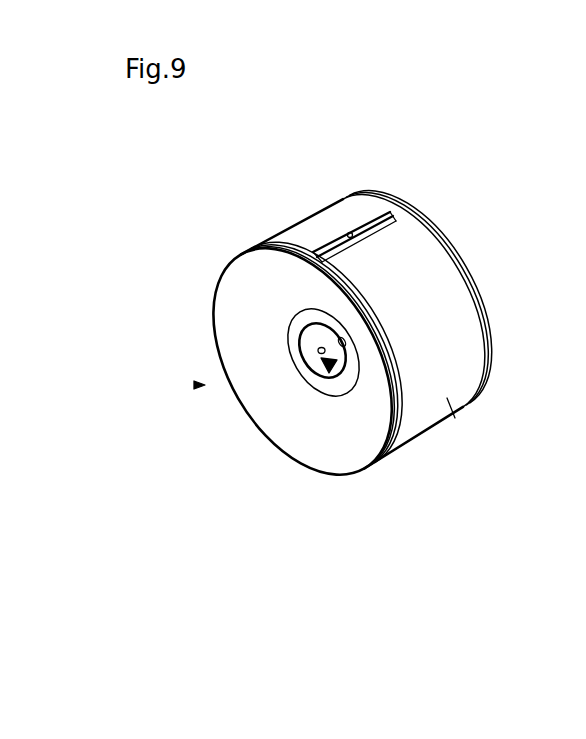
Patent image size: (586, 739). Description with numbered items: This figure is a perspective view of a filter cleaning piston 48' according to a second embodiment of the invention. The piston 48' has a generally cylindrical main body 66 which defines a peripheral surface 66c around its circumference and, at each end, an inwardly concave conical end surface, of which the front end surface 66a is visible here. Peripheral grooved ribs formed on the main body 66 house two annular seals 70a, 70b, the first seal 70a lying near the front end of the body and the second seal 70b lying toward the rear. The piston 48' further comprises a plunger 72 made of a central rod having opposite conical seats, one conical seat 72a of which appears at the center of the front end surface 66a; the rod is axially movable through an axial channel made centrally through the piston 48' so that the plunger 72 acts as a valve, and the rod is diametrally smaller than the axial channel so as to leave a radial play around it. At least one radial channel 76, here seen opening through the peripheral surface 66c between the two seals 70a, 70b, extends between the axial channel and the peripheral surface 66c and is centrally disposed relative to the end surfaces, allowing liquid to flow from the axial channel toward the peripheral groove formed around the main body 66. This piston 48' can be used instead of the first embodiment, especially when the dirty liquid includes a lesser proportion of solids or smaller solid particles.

The piston 48' is at (148, 406).
The main body 66 is at (420, 277).
The end surface 66a is at (330, 440).
The peripheral surface 66c is at (458, 412).
The annular seal 70a is at (397, 435).
The annular seal 70b is at (392, 206).
The plunger 72 is at (325, 364).
The conical seat 72a is at (310, 335).
The radial channel 76 is at (348, 235).